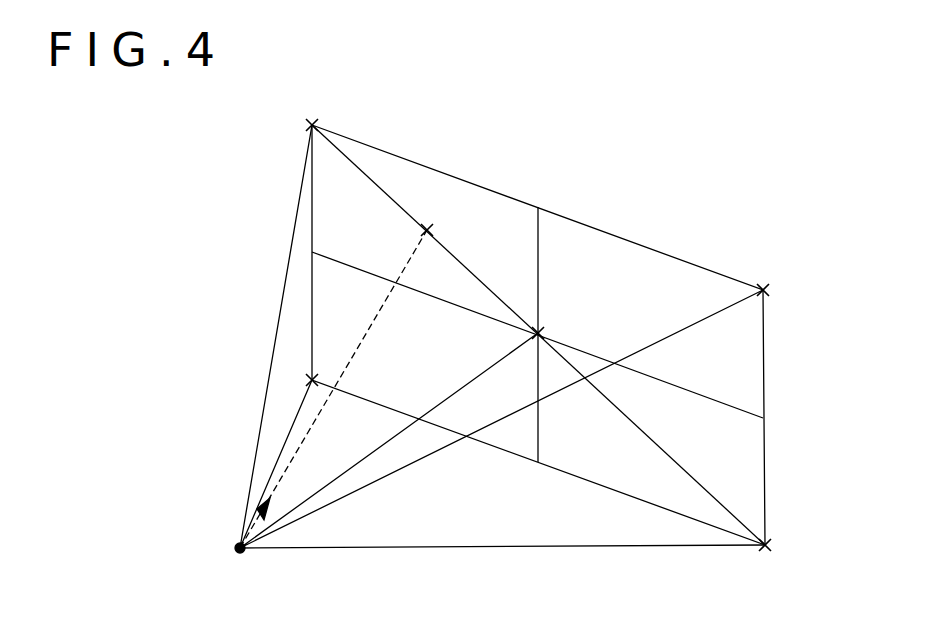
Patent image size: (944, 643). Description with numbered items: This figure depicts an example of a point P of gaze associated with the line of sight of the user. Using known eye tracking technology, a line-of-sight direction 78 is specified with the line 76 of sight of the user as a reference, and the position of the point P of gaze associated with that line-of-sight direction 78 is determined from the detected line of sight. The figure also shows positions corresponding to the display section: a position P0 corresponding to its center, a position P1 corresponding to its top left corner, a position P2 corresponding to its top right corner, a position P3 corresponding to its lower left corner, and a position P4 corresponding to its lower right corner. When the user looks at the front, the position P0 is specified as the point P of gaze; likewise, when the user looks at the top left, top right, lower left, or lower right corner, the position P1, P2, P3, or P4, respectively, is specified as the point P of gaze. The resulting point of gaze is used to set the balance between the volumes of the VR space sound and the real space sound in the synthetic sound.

The line of sight 76 is at (243, 558).
The line-of-sight direction 78 is at (252, 525).
The point of gaze P is at (424, 222).
The position P0 is at (554, 329).
The position P1 is at (311, 111).
The position P2 is at (781, 291).
The position P3 is at (295, 380).
The position P4 is at (783, 552).